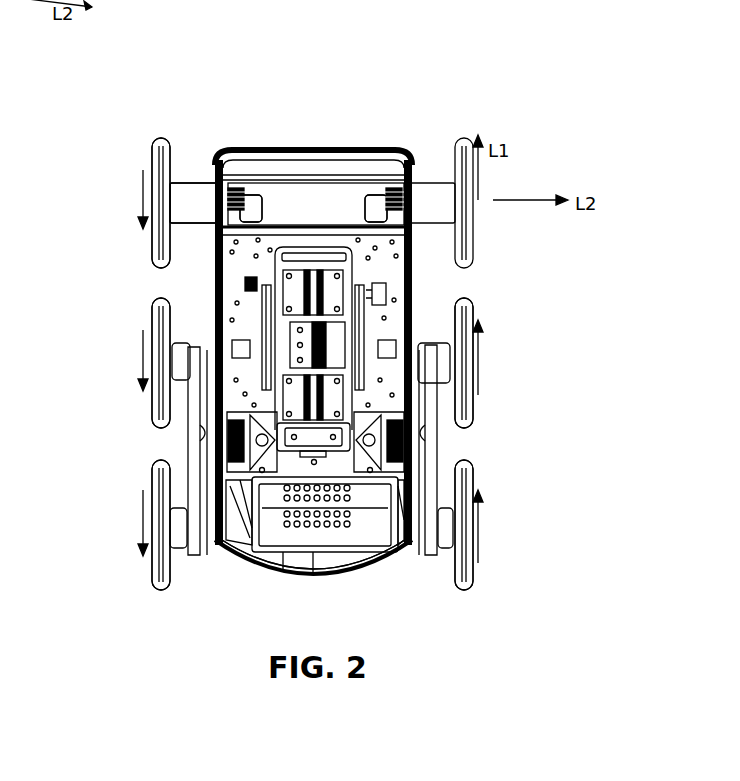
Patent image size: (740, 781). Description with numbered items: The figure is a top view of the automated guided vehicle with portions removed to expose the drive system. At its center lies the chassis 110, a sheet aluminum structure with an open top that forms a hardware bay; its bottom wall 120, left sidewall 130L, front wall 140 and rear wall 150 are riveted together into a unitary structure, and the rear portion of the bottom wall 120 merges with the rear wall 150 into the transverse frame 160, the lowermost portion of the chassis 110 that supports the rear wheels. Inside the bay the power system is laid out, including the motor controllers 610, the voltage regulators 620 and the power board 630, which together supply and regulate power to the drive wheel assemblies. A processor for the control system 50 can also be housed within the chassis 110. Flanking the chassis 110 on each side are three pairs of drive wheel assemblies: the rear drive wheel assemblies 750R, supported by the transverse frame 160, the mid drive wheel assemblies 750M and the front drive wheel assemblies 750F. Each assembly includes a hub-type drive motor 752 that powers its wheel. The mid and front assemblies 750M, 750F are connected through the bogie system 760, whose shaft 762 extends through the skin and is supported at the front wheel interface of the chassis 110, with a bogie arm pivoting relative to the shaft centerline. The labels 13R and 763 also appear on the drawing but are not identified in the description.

The control system 50 is at (615, 284).
The chassis 110 is at (340, 158).
The bottom wall 120 is at (340, 158).
The left sidewall 130L is at (327, 250).
The right axle housing 13R is at (215, 237).
The front wall 140 is at (284, 560).
The rear wall 150 is at (283, 158).
The transverse frame 160 is at (333, 243).
The motor controllers 610 is at (332, 273).
The voltage regulators 620 is at (380, 293).
The power board 630 is at (343, 310).
The rear drive wheel assemblies 750R is at (136, 138).
The mid drive wheel assemblies 750M is at (136, 298).
The front drive wheel assemblies 750F is at (136, 460).
The hub-type drive motor 752 is at (200, 190).
The bogie system 760 is at (548, 295).
The shaft 762 is at (385, 552).
The suspension bracket 763 is at (200, 347).